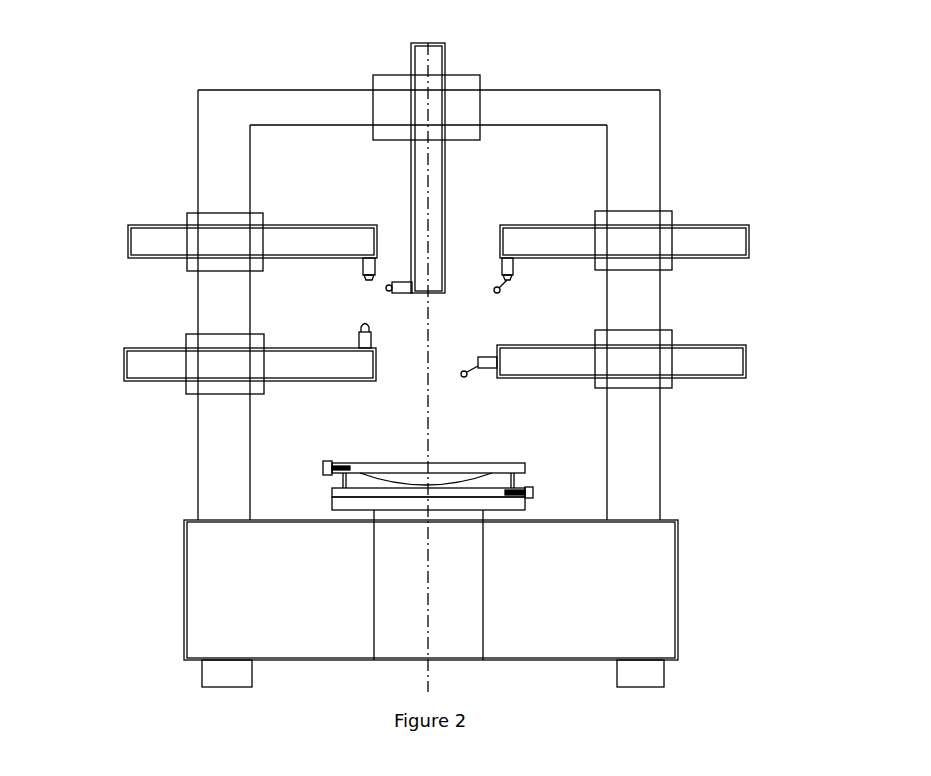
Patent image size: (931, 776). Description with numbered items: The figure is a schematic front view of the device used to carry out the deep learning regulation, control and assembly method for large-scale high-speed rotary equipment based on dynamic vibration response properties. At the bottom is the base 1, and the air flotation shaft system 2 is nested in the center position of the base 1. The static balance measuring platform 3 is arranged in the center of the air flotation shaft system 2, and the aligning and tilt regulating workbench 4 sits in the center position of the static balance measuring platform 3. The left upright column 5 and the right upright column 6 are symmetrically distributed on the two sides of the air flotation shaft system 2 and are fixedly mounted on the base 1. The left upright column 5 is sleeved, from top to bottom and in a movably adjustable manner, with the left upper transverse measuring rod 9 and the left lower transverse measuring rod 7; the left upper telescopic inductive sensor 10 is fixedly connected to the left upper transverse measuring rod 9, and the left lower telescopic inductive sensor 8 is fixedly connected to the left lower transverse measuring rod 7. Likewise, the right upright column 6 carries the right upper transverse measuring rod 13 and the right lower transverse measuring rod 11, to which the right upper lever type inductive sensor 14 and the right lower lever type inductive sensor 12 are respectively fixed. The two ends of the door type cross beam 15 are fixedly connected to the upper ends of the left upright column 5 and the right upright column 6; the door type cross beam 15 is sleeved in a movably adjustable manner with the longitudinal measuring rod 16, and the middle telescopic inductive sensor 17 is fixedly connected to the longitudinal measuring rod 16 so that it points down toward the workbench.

The base 1 is at (360, 596).
The air flotation shaft system 2 is at (599, 585).
The static balance measuring platform 3 is at (578, 473).
The aligning and tilt regulating workbench 4 is at (573, 435).
The left upright column 5 is at (146, 305).
The right upright column 6 is at (715, 305).
The left lower transverse measuring rod 7 is at (209, 356).
The left lower telescopic inductive sensor 8 is at (206, 310).
The left upper transverse measuring rod 9 is at (209, 210).
The left upper telescopic inductive sensor 10 is at (208, 185).
The right lower transverse measuring rod 11 is at (664, 326).
The right lower lever type inductive sensor 12 is at (646, 302).
The right upper transverse measuring rod 13 is at (666, 225).
The right upper lever type inductive sensor 14 is at (663, 213).
The door type cross beam 15 is at (351, 78).
The longitudinal measuring rod 16 is at (495, 168).
The middle telescopic inductive sensor 17 is at (227, 260).